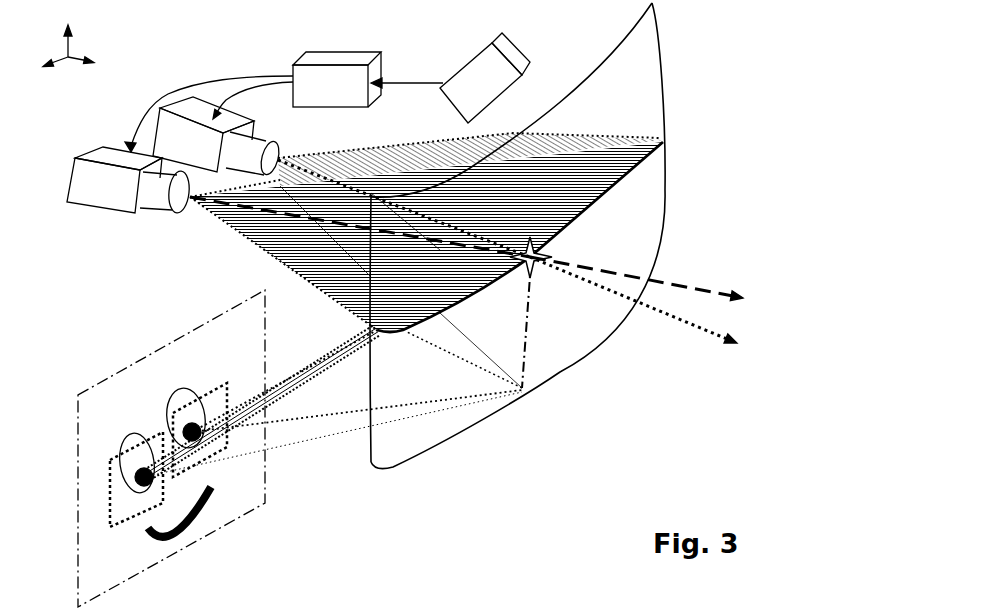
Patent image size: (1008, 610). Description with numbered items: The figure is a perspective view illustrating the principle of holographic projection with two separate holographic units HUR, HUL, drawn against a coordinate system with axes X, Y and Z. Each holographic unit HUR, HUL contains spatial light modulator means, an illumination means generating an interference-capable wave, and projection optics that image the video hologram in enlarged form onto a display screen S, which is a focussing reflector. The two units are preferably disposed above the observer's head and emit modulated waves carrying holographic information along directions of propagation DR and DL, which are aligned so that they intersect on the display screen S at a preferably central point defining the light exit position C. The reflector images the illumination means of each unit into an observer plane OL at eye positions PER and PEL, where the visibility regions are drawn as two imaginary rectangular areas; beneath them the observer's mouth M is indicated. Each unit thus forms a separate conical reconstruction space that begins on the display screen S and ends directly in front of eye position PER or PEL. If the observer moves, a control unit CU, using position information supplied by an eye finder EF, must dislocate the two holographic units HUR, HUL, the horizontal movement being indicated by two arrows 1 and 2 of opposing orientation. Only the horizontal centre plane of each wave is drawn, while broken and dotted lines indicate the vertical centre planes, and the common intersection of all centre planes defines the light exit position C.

The arrow 1 is at (194, 304).
The arrow 2 is at (152, 94).
The X axis X is at (50, 52).
The Y axis Y is at (78, 32).
The Z axis Z is at (82, 74).
The holographic unit HUL is at (129, 180).
The holographic unit HUR is at (217, 136).
The control unit CU is at (284, 102).
The eye finder EF is at (485, 78).
The display screen S is at (525, 236).
The light exit position C is at (547, 257).
The direction of propagation DL is at (484, 257).
The direction of propagation DR is at (528, 267).
The observer plane OL is at (171, 441).
The eye position PEL is at (195, 415).
The eye position PER is at (136, 464).
The mouth of observer M is at (179, 522).